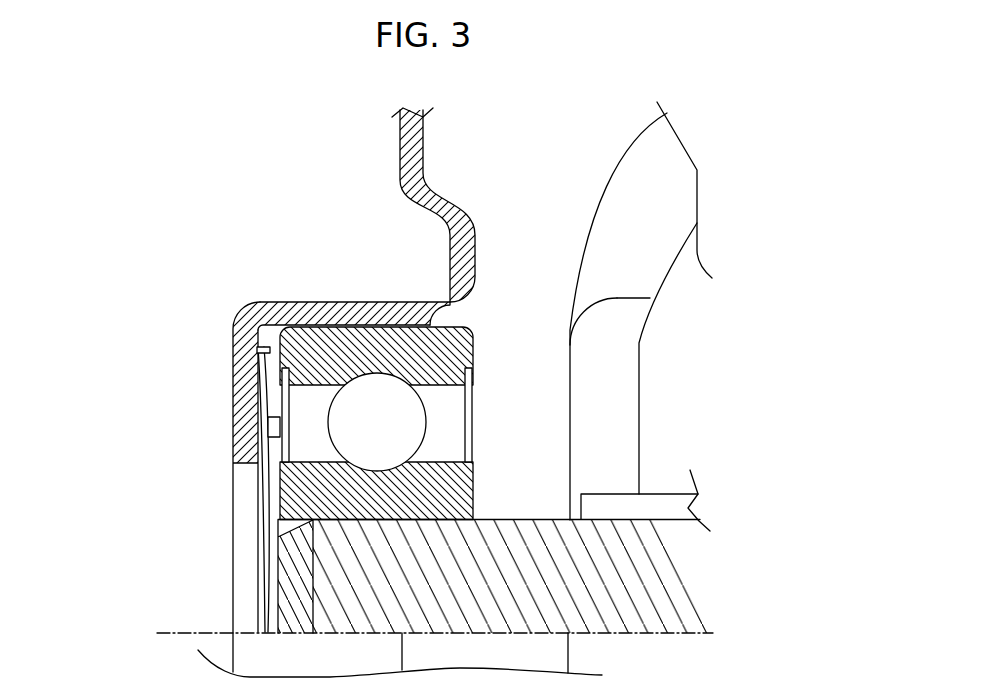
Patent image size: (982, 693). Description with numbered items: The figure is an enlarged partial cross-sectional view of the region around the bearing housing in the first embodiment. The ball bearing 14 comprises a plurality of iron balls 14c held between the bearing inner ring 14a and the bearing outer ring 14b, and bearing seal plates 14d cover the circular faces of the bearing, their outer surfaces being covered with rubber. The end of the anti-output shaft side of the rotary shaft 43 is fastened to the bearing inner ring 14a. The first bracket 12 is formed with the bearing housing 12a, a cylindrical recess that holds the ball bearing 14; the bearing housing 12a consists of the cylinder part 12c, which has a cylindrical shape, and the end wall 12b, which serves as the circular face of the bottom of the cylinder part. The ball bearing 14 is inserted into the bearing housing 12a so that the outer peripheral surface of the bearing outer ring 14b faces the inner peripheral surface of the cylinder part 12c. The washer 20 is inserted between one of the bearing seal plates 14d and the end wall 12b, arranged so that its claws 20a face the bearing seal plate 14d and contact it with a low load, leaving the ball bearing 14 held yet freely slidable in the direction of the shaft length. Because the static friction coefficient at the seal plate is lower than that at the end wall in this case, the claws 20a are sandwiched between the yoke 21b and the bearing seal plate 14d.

The first bracket 12 is at (410, 162).
The bearing housing 12a is at (272, 433).
The end wall 12b is at (243, 407).
The cylinder part 12c is at (357, 313).
The ball bearing 14 is at (549, 416).
The bearing inner ring 14a is at (453, 486).
The bearing outer ring 14b is at (437, 357).
The iron balls 14c is at (378, 405).
The bearing seal plates 14d is at (473, 438).
The washer 20 is at (154, 489).
The claws 20a is at (280, 427).
The yoke 21b is at (258, 520).
The rotary shaft 43 is at (328, 590).